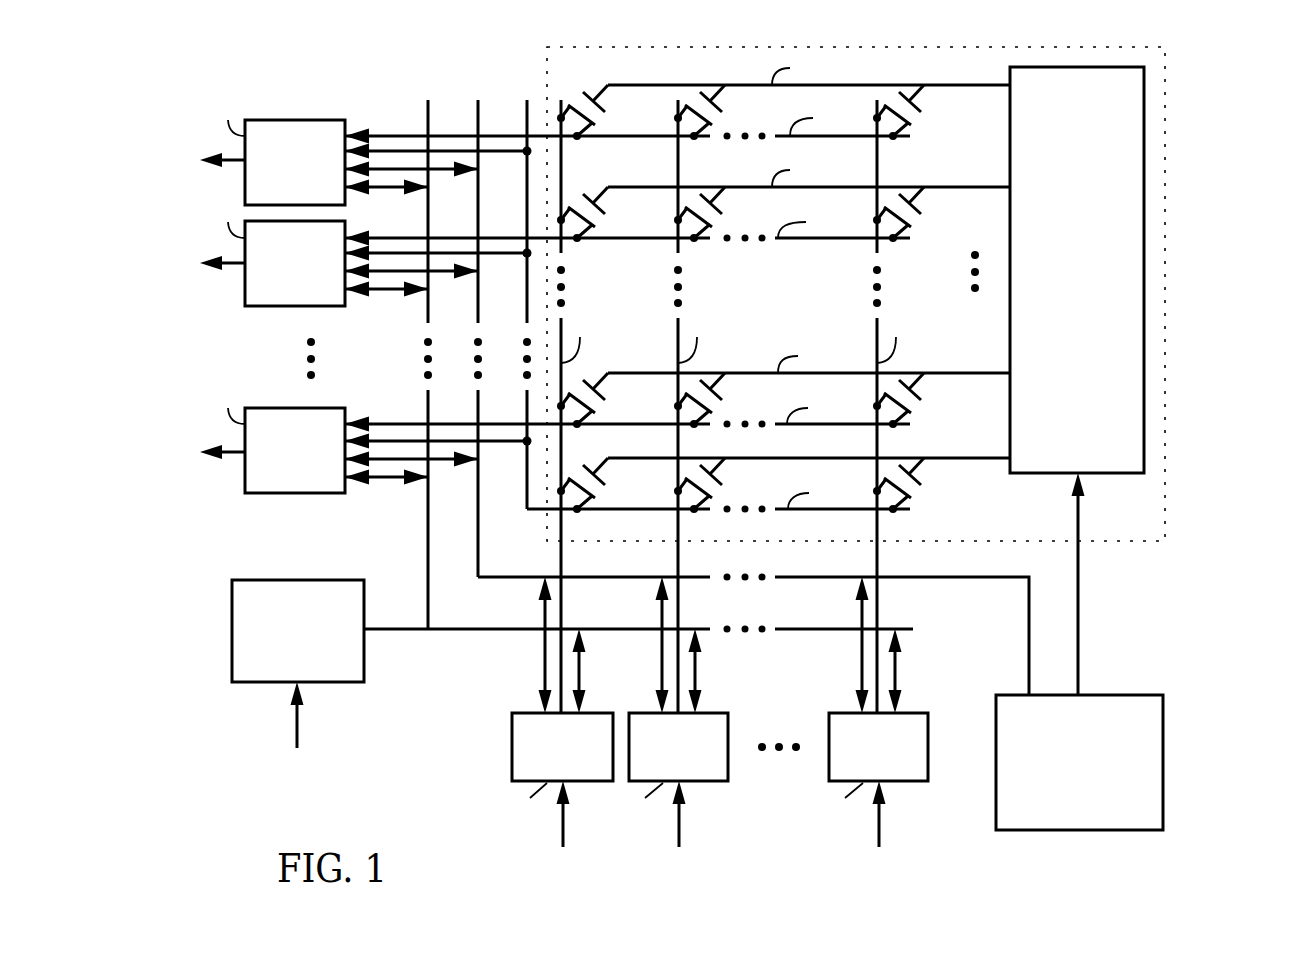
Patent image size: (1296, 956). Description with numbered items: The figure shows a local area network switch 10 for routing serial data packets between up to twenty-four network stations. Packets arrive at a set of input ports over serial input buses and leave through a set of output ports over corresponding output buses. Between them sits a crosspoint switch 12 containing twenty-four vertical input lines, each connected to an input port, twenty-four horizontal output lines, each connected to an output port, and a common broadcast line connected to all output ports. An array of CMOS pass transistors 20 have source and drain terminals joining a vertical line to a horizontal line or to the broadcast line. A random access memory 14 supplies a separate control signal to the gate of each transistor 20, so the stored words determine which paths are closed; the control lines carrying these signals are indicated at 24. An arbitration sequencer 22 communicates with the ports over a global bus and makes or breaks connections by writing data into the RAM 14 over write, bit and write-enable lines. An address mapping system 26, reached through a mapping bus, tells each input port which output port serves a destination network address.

The local area network switch 10 is at (707, 442).
The crosspoint switch 12 is at (697, 48).
The random access memory 14 is at (1141, 471).
The CMOS pass transistor 20 is at (583, 95).
The arbitration sequencer 22 is at (1161, 827).
The control bus 24 is at (977, 77).
The address mapping system 26 is at (364, 598).